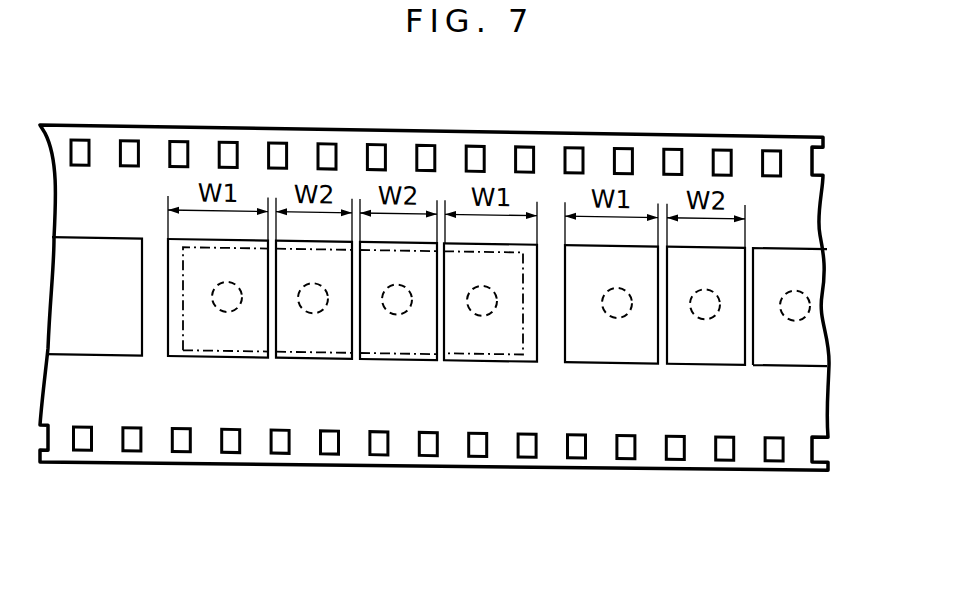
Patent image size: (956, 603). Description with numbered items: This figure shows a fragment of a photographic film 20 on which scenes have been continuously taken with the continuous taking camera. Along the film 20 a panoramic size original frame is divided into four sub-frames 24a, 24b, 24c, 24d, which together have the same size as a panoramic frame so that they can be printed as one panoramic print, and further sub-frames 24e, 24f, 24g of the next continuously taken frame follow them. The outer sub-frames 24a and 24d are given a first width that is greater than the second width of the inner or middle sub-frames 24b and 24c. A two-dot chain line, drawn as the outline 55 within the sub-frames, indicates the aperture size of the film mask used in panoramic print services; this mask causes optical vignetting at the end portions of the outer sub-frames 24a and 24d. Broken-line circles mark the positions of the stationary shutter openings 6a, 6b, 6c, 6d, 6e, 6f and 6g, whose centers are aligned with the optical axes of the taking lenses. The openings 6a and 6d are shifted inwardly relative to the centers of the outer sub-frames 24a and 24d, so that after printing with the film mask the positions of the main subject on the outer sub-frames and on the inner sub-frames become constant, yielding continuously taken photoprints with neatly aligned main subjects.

The photographic film 20 is at (708, 127).
The outer sub-frame 24a is at (177, 357).
The inner sub-frame 24b is at (308, 356).
The inner sub-frame 24c is at (395, 356).
The outer sub-frame 24d is at (482, 355).
The sub-frame 24e is at (598, 356).
The sub-frame 24f is at (695, 355).
The sub-frame 24g is at (778, 427).
The semiconductor chip outline 55 is at (183, 328).
The stationary shutter opening 6a is at (229, 310).
The stationary shutter opening 6b is at (320, 309).
The stationary shutter opening 6c is at (403, 309).
The stationary shutter opening 6d is at (488, 309).
The stationary shutter opening 6e is at (622, 309).
The stationary shutter opening 6f is at (708, 309).
The stationary shutter opening 6g is at (802, 309).